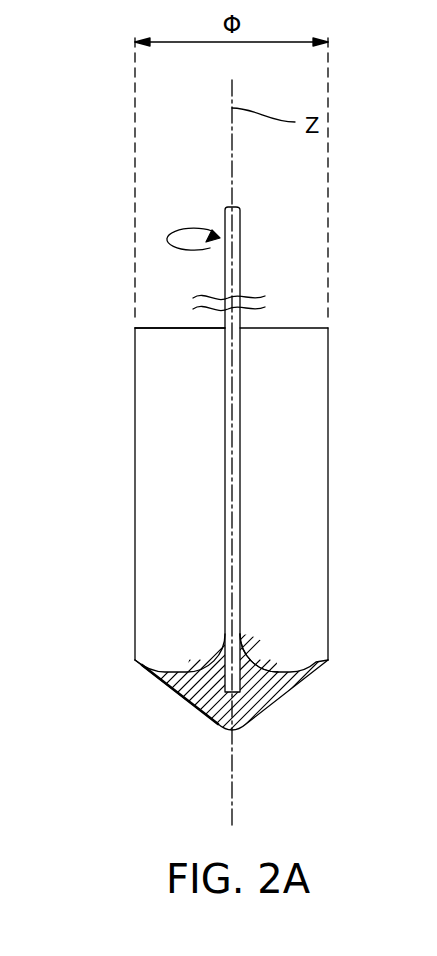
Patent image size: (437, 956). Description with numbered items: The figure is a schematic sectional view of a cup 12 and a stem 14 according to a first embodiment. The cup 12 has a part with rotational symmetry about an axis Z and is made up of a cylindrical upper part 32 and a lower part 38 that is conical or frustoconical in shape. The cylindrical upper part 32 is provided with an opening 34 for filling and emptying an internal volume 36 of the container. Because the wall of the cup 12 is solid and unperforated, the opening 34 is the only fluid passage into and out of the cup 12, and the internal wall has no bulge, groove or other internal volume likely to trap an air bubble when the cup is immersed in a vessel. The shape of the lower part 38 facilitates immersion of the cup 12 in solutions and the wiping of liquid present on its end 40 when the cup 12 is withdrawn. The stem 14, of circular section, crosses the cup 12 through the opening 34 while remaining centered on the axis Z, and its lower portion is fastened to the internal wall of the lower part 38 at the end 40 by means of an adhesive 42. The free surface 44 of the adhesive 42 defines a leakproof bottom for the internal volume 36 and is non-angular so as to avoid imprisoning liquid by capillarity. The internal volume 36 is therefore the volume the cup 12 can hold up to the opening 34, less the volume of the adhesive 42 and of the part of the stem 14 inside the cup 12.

The cup 12 is at (234, 527).
The stem 14 is at (252, 273).
The cylindrical upper part 32 is at (135, 369).
The opening 34 is at (180, 327).
The internal volume 36 is at (168, 497).
The lower part 38 is at (304, 676).
The end 40 is at (210, 740).
The adhesive 42 is at (252, 706).
The free surface 44 is at (262, 652).